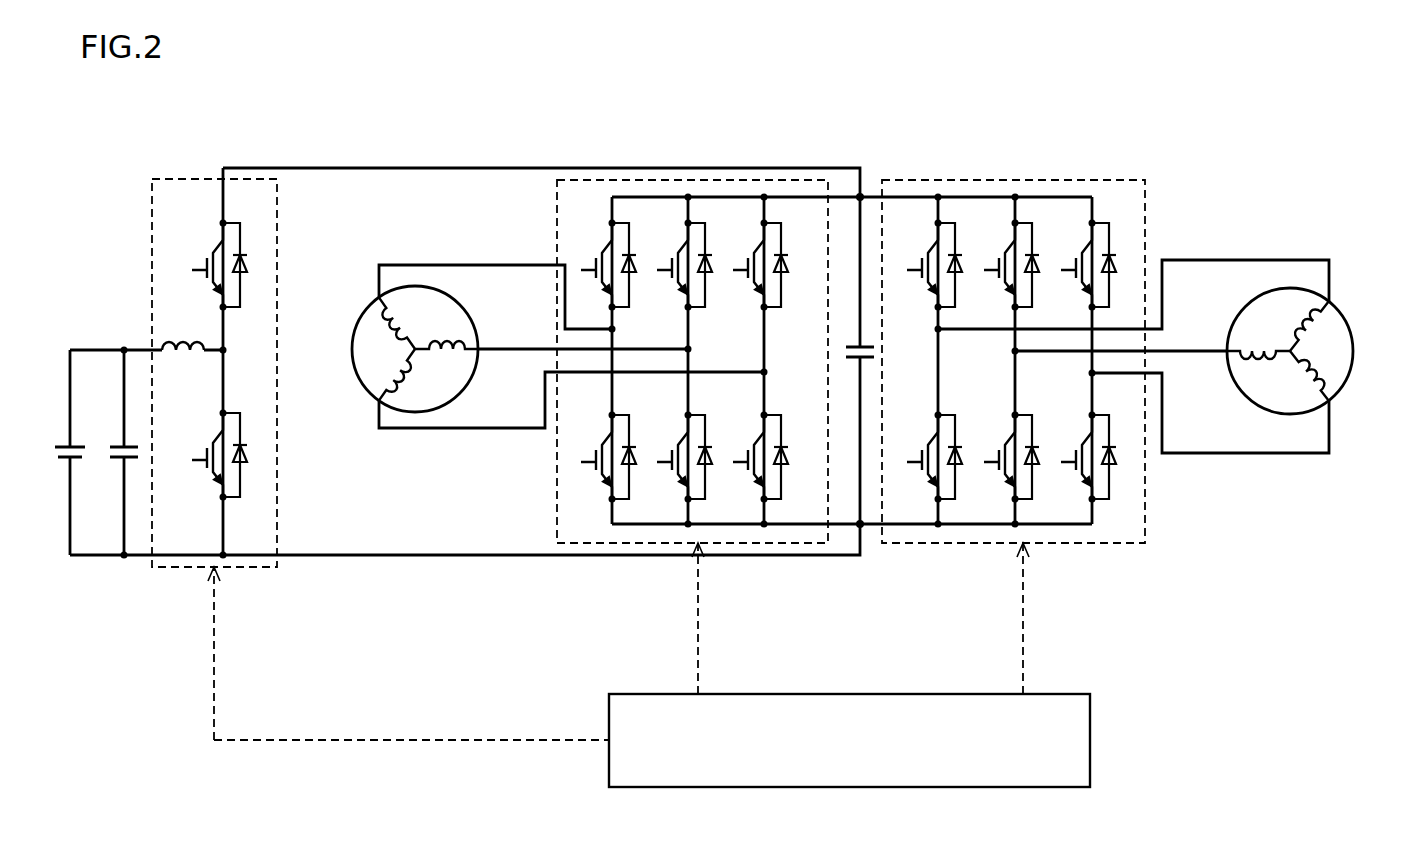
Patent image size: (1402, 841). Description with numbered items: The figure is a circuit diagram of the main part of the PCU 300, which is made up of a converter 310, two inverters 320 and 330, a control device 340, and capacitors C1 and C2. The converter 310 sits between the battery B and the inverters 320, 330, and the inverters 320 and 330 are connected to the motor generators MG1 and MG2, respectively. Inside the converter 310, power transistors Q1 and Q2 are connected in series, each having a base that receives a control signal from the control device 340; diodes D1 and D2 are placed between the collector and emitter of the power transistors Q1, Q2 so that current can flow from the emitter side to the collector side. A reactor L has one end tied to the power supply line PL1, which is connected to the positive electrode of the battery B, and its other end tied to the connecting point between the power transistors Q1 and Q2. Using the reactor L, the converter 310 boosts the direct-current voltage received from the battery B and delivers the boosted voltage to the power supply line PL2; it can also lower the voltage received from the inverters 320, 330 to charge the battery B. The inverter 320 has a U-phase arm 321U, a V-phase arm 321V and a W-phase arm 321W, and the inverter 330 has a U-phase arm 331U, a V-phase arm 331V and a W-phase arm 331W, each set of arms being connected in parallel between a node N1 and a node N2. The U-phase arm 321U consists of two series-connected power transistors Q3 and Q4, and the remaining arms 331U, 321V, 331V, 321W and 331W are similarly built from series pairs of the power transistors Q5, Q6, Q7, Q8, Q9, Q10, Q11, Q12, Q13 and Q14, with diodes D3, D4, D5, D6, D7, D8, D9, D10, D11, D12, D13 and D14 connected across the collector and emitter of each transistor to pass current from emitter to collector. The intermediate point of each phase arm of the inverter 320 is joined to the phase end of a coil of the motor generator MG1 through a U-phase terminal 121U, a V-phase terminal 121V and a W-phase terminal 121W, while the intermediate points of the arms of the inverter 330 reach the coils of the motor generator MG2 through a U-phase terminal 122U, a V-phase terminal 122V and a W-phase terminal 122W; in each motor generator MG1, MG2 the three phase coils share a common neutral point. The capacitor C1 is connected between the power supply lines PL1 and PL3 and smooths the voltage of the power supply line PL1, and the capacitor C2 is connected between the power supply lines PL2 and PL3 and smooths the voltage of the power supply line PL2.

The PCU 300 is at (826, 109).
The converter 310 is at (176, 178).
The inverter 320 is at (1025, 180).
The inverter 330 is at (712, 180).
The control device 340 is at (850, 694).
The power supply line PL1 is at (90, 350).
The power supply line PL2 is at (443, 168).
The power supply line PL3 is at (455, 556).
The battery B is at (62, 446).
The capacitor C1 is at (115, 446).
The capacitor C2 is at (852, 343).
The reactor L is at (178, 342).
The node N1 is at (862, 196).
The node N2 is at (862, 528).
The power transistor Q1 is at (205, 265).
The power transistor Q2 is at (205, 455).
The power transistor Q3 is at (921, 265).
The power transistor Q4 is at (921, 457).
The power transistor Q5 is at (998, 265).
The power transistor Q6 is at (998, 457).
The power transistor Q7 is at (1075, 265).
The power transistor Q8 is at (1075, 457).
The power transistor Q9 is at (596, 265).
The power transistor Q10 is at (589, 457).
The power transistor Q11 is at (666, 265).
The power transistor Q12 is at (666, 457).
The power transistor Q13 is at (742, 265).
The power transistor Q14 is at (742, 457).
The diode D1 is at (246, 265).
The diode D2 is at (246, 455).
The diode D3 is at (962, 265).
The diode D4 is at (961, 457).
The diode D5 is at (1039, 265).
The diode D6 is at (1039, 457).
The diode D7 is at (1116, 265).
The diode D8 is at (1116, 457).
The diode D9 is at (636, 265).
The diode D10 is at (641, 457).
The diode D11 is at (716, 265).
The diode D12 is at (716, 457).
The diode D13 is at (792, 265).
The diode D14 is at (792, 457).
The motor generator MG1 is at (1342, 307).
The motor generator MG2 is at (363, 312).
The U-phase terminal 121U is at (1280, 260).
The V-phase terminal 121V is at (1193, 351).
The W-phase terminal 121W is at (1228, 453).
The U-phase terminal 122U is at (420, 265).
The V-phase terminal 122V is at (512, 349).
The W-phase terminal 122W is at (458, 428).
The U-phase arm 321U is at (886, 346).
The V-phase arm 321V is at (965, 366).
The W-phase arm 321W is at (1038, 388).
The U-phase arm 331U is at (620, 344).
The V-phase arm 331V is at (740, 366).
The W-phase arm 331W is at (770, 388).